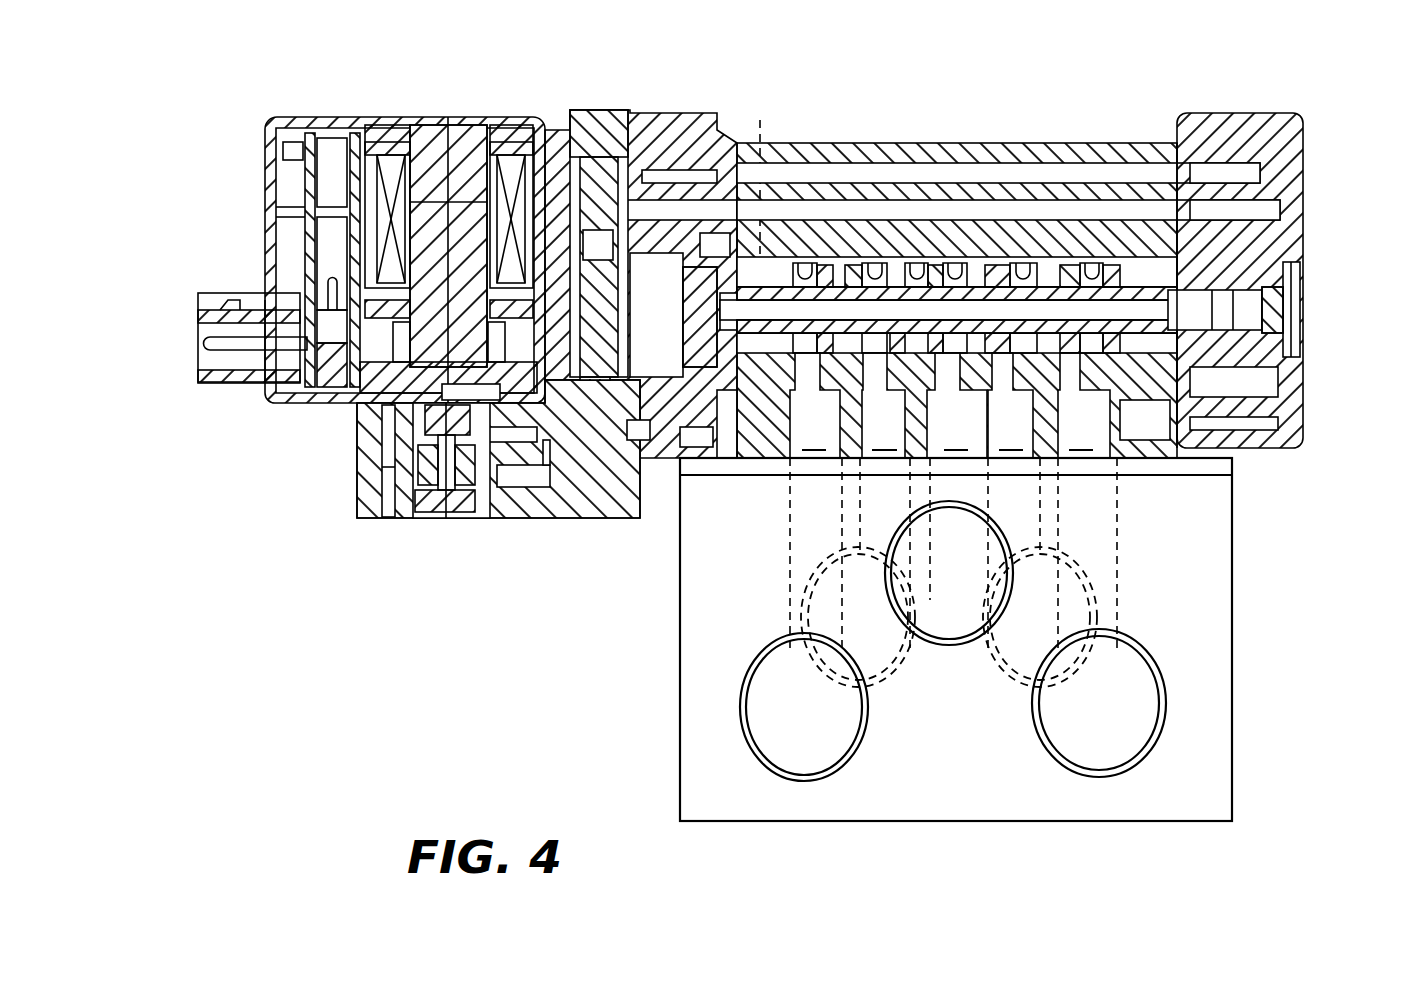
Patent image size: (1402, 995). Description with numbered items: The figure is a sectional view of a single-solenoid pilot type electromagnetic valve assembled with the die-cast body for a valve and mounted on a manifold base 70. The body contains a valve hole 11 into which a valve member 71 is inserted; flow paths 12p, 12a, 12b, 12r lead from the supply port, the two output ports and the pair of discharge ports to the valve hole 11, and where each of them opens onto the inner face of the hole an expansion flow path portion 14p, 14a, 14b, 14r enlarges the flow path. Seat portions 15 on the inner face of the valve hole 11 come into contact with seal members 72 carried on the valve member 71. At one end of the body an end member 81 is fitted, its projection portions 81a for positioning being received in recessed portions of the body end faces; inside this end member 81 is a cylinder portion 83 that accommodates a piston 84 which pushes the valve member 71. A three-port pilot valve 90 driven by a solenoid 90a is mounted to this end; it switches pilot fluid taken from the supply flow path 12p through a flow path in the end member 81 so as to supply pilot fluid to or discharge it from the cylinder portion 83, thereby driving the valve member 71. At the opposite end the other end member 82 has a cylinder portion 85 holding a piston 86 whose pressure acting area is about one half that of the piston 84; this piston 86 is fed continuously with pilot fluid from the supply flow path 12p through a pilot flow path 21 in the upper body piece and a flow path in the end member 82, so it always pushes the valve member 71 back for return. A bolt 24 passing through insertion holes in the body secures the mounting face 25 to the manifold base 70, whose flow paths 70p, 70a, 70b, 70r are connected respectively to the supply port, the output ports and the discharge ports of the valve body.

The pilot valve 90 is at (436, 113).
The solenoid 90a is at (510, 120).
The end member 81 is at (645, 117).
The cylinder portion 83 is at (655, 258).
The piston 84 is at (692, 265).
The projection portion for positioning 81a is at (743, 185).
The bolt 24 is at (768, 120).
The seal member 72 is at (830, 262).
The valve member 71 is at (924, 262).
The expansion flow path portion 14p is at (964, 262).
The expansion flow path portion 14b is at (1026, 262).
The expansion flow path portion 14a is at (887, 262).
The expansion flow path portion 14r is at (801, 262).
The seat portion 15 is at (853, 262).
The valve hole 11 is at (1043, 300).
The pilot flow path 21 is at (1127, 173).
The end member 82 is at (1240, 120).
The cylinder portion 85 is at (1300, 267).
The piston 86 is at (1287, 320).
The flow path 12r is at (775, 415).
The flow path 12a is at (855, 450).
The supply flow path 12p is at (950, 360).
The flow path 12b is at (1057, 440).
The mounting face 25 is at (1130, 442).
The manifold base 70 is at (1220, 737).
The flow path in manifold base 70a is at (893, 643).
The flow path in manifold base 70b is at (1110, 593).
The flow path in manifold base 70p is at (947, 628).
The flow path in manifold base 70r is at (812, 757).